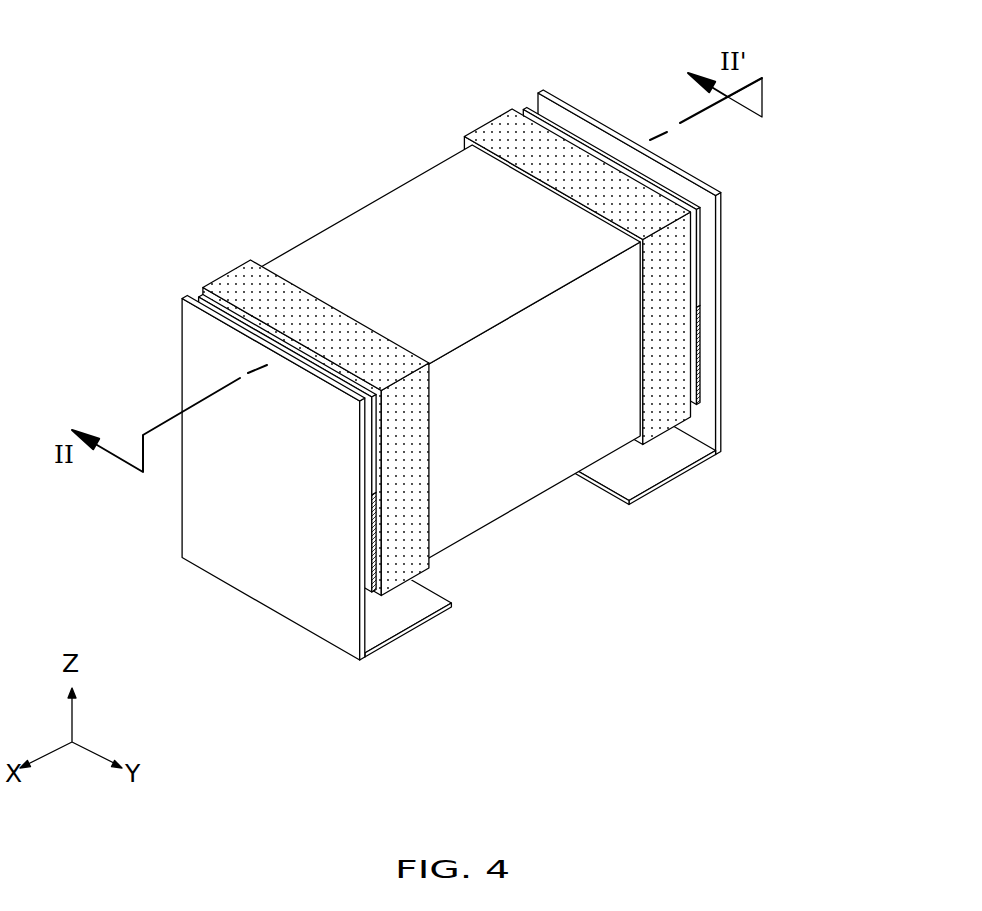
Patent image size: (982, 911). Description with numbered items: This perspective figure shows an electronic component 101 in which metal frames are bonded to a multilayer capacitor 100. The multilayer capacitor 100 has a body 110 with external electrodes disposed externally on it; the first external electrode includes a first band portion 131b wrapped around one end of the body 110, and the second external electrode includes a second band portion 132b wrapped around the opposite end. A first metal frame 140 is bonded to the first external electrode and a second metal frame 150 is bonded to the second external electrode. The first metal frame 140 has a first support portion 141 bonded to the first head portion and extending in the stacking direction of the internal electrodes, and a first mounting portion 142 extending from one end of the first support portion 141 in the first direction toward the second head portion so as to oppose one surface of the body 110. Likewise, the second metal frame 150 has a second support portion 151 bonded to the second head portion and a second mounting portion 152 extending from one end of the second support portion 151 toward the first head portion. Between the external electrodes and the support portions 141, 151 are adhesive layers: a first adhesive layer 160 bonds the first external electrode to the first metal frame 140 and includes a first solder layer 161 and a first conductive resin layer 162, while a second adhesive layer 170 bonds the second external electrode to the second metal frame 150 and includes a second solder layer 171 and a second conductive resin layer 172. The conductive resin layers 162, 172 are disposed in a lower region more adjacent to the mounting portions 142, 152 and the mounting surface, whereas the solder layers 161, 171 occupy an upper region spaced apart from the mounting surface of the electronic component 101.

The electronic component 101 is at (206, 33).
The multilayer capacitor 100 is at (436, 326).
The body 110 is at (348, 247).
The first band portion 131b is at (235, 292).
The second band portion 132b is at (510, 135).
The first metal frame 140 is at (237, 519).
The first support portion 141 is at (194, 478).
The first mounting portion 142 is at (319, 579).
The second metal frame 150 is at (653, 331).
The second support portion 151 is at (707, 411).
The second mounting portion 152 is at (667, 460).
The first adhesive layer 160 is at (419, 466).
The first solder layer 161 is at (372, 458).
The first conductive resin layer 162 is at (372, 538).
The second adhesive layer 170 is at (707, 256).
The second solder layer 171 is at (697, 276).
The second conductive resin layer 172 is at (698, 354).